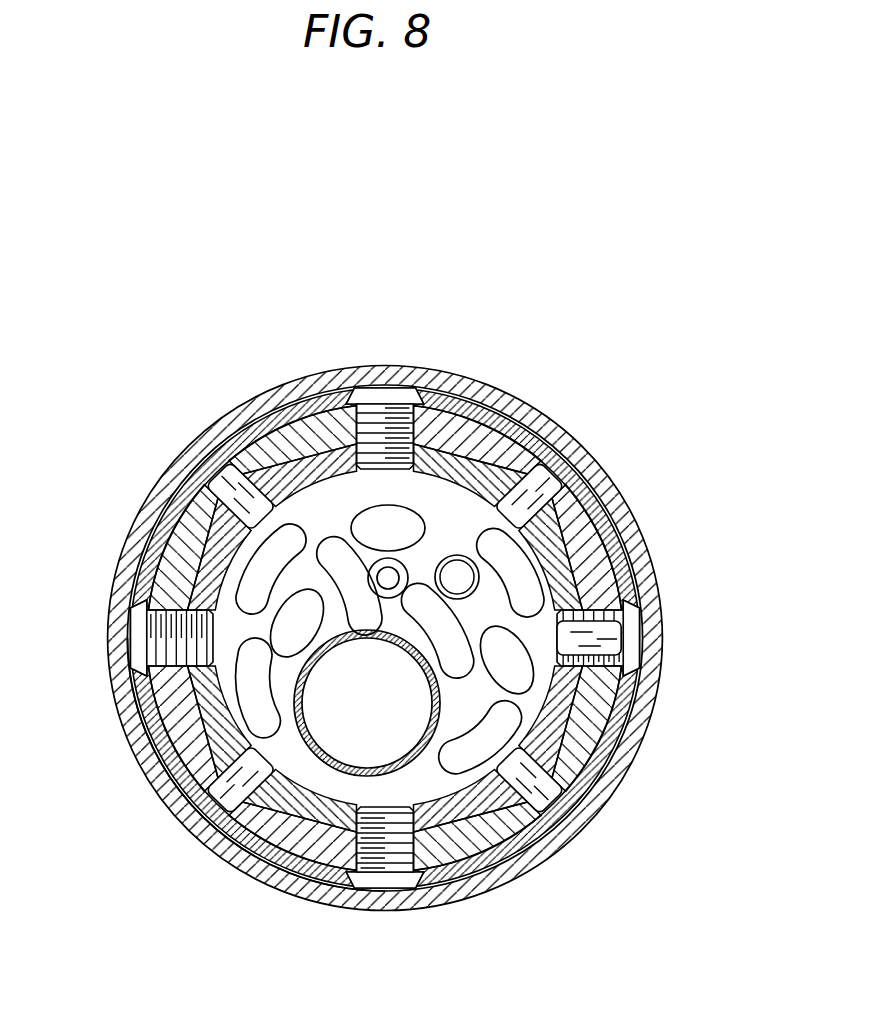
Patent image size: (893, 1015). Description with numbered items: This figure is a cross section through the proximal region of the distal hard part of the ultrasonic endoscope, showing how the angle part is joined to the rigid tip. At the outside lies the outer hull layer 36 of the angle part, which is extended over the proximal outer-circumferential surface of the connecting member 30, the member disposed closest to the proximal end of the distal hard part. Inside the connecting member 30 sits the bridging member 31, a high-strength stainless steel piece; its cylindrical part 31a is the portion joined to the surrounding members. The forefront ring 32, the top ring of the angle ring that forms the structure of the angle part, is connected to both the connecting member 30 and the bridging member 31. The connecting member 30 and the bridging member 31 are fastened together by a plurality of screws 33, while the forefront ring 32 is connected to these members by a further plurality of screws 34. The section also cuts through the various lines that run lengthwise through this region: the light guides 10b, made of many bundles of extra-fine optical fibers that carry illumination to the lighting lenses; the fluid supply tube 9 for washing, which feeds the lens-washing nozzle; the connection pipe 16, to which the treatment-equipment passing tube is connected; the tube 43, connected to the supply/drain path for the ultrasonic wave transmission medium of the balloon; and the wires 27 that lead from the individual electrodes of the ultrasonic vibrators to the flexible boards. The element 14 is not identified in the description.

The fluid supply tube 9 is at (457, 554).
The light guide 10b is at (297, 637).
The opening 14 is at (390, 524).
The connection pipe 16 is at (415, 762).
The wires 27 is at (397, 616).
The connecting member 30 is at (170, 583).
The bridging member 31 is at (495, 882).
The cylindrical part 31a is at (300, 830).
The forefront ring 32 is at (577, 437).
The screws 33 is at (210, 452).
The screws 34 is at (400, 400).
The outer hull layer 36 is at (523, 415).
The tube 43 is at (377, 566).